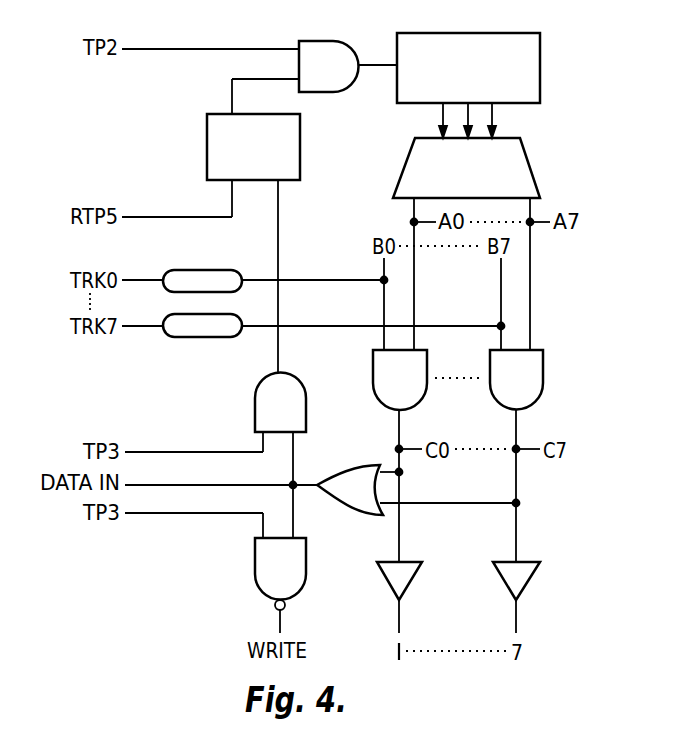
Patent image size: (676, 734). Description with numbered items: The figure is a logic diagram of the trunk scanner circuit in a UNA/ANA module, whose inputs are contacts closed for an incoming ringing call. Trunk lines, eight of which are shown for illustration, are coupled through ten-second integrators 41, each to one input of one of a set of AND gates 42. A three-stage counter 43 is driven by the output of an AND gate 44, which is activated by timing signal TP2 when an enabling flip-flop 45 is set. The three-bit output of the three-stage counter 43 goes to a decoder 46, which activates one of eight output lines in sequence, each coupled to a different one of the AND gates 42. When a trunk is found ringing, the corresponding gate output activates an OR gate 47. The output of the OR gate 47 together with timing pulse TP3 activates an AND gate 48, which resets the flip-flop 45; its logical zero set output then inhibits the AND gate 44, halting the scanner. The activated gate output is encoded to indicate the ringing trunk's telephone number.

The 10-second integrators 41 is at (208, 374).
The AND gates 42 is at (472, 414).
The three-stage counter 43 is at (540, 66).
The AND gate 44 is at (328, 41).
The enabling flip-flop 45 is at (207, 140).
The decoder 46 is at (527, 173).
The OR gate 47 is at (358, 465).
The AND gate 48 is at (255, 420).